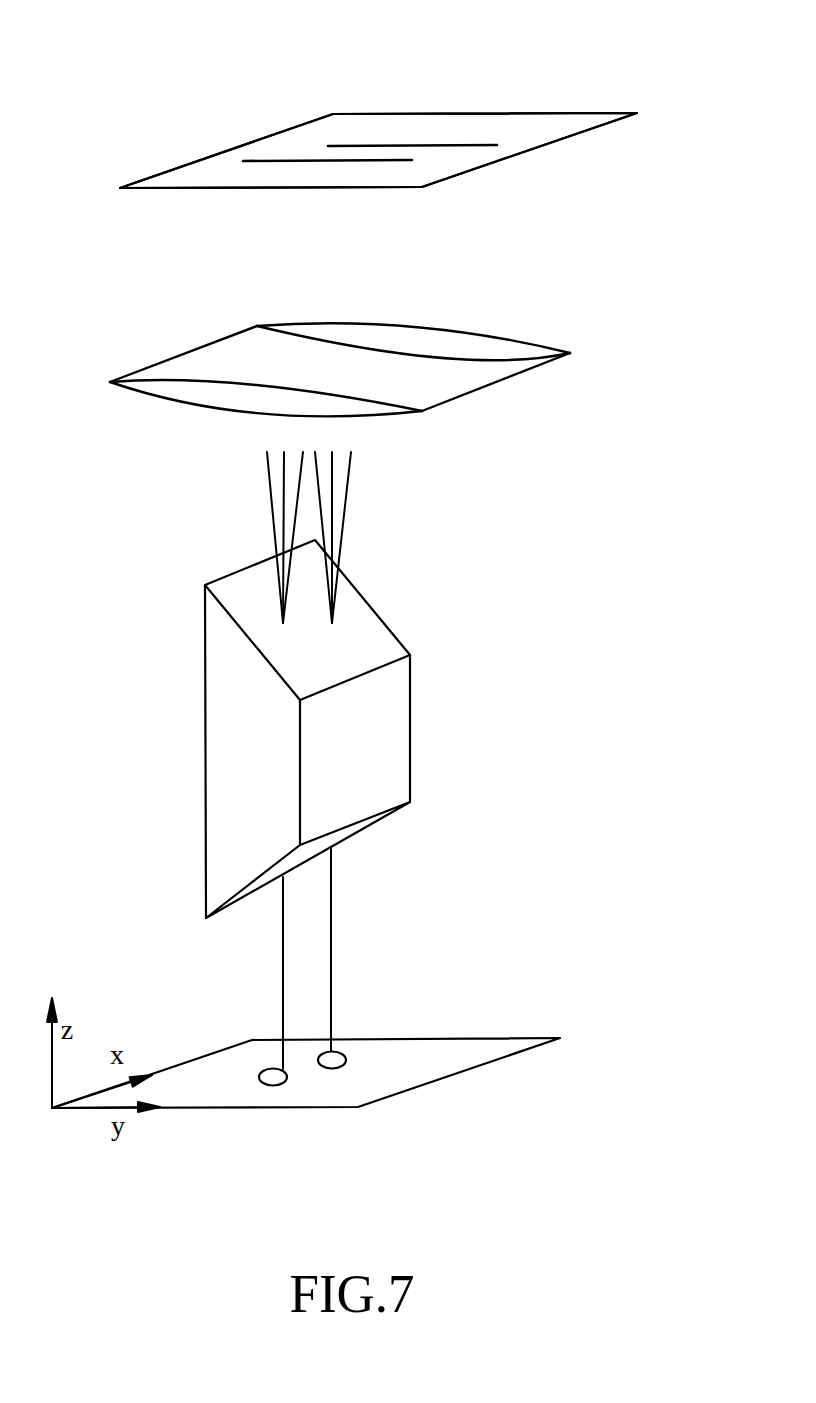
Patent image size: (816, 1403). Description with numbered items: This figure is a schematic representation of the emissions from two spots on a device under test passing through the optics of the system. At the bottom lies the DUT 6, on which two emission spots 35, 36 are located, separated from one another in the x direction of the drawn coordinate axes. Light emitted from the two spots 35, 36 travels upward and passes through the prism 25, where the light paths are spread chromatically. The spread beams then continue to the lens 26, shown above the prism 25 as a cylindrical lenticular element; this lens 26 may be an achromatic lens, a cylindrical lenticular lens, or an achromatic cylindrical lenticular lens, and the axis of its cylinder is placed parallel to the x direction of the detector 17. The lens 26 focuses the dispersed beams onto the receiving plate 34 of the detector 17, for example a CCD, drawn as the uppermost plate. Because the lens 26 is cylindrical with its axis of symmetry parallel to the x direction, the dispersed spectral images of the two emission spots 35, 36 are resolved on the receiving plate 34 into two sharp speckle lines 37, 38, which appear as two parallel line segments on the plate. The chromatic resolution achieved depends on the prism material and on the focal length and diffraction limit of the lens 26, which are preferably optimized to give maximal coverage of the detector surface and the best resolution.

The DUT 6 is at (435, 1057).
The detector 17 is at (543, 180).
The prism 25 is at (390, 728).
The lens 26 is at (457, 380).
The receiving plate 34 is at (567, 125).
The emission spot 35 is at (345, 1058).
The emission spot 36 is at (265, 1085).
The speckle line 37 is at (427, 145).
The speckle line 38 is at (322, 160).